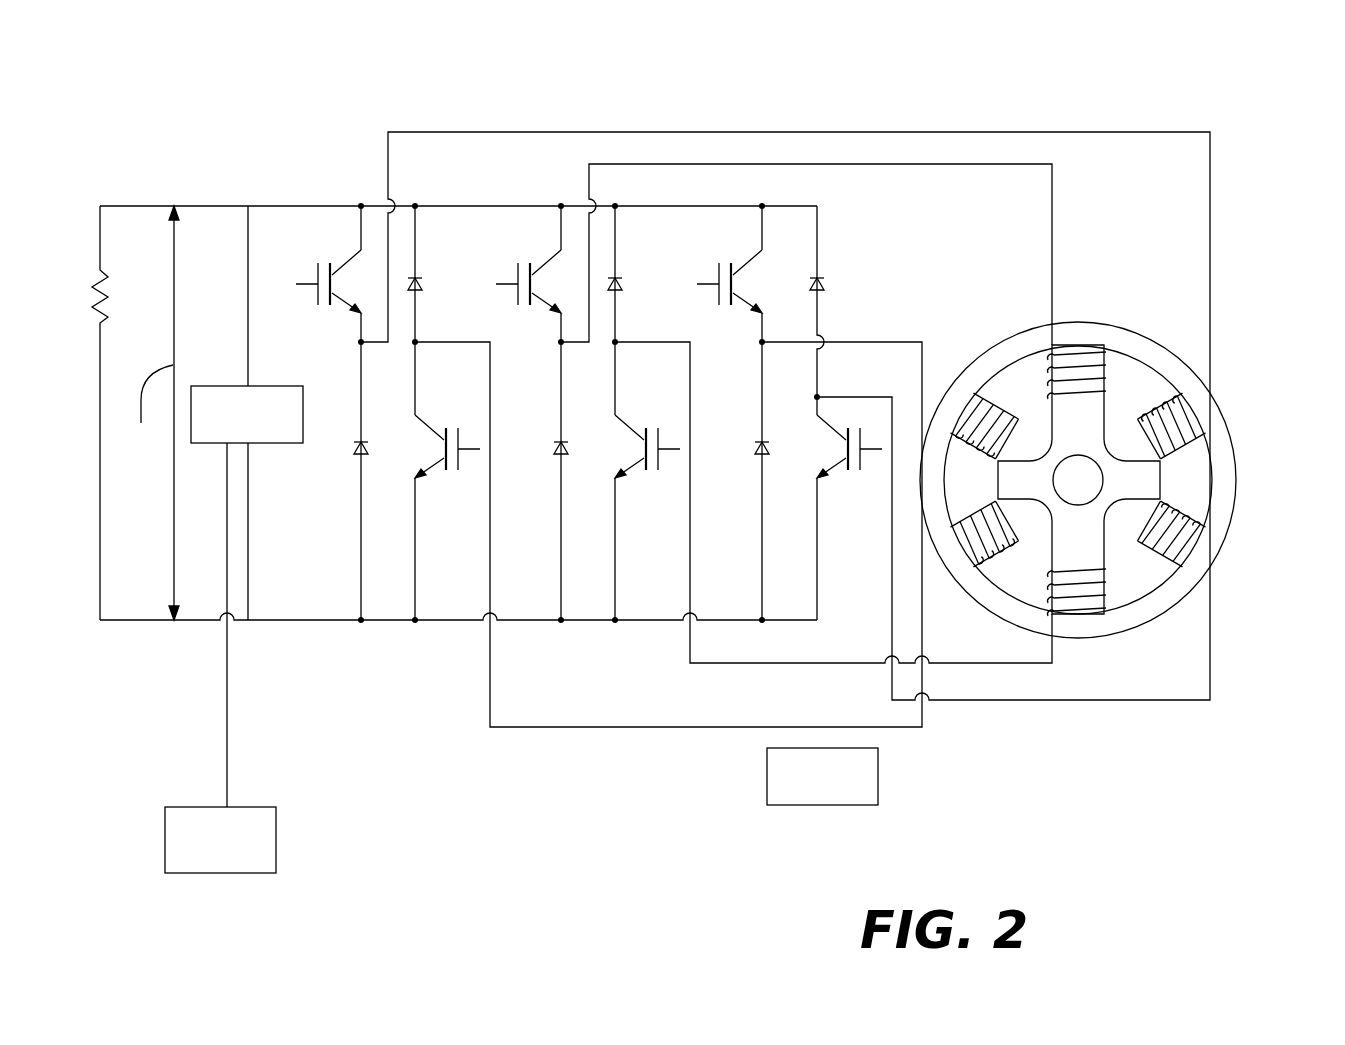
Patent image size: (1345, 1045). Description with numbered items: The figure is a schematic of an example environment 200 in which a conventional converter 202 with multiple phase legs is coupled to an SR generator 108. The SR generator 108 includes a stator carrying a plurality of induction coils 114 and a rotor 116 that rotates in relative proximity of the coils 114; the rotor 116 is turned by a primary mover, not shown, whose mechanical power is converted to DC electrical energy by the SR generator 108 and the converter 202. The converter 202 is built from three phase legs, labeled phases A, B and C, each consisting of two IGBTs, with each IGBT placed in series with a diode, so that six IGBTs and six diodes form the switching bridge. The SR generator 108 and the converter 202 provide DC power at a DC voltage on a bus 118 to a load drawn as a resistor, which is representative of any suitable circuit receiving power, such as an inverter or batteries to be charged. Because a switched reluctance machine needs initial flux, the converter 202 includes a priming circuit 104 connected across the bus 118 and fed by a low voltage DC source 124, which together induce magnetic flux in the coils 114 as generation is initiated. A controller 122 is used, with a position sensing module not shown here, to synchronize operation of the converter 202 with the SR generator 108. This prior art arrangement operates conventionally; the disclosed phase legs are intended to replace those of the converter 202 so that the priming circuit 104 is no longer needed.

The example environment 200 is at (718, 482).
The converter 202 is at (369, 125).
The bus 118 is at (306, 204).
The priming circuit 104 is at (268, 384).
The SR generator 108 is at (1109, 473).
The coils 114 is at (1182, 420).
The rotor 116 is at (1142, 483).
The controller 122 is at (767, 780).
The low voltage DC source 124 is at (253, 874).